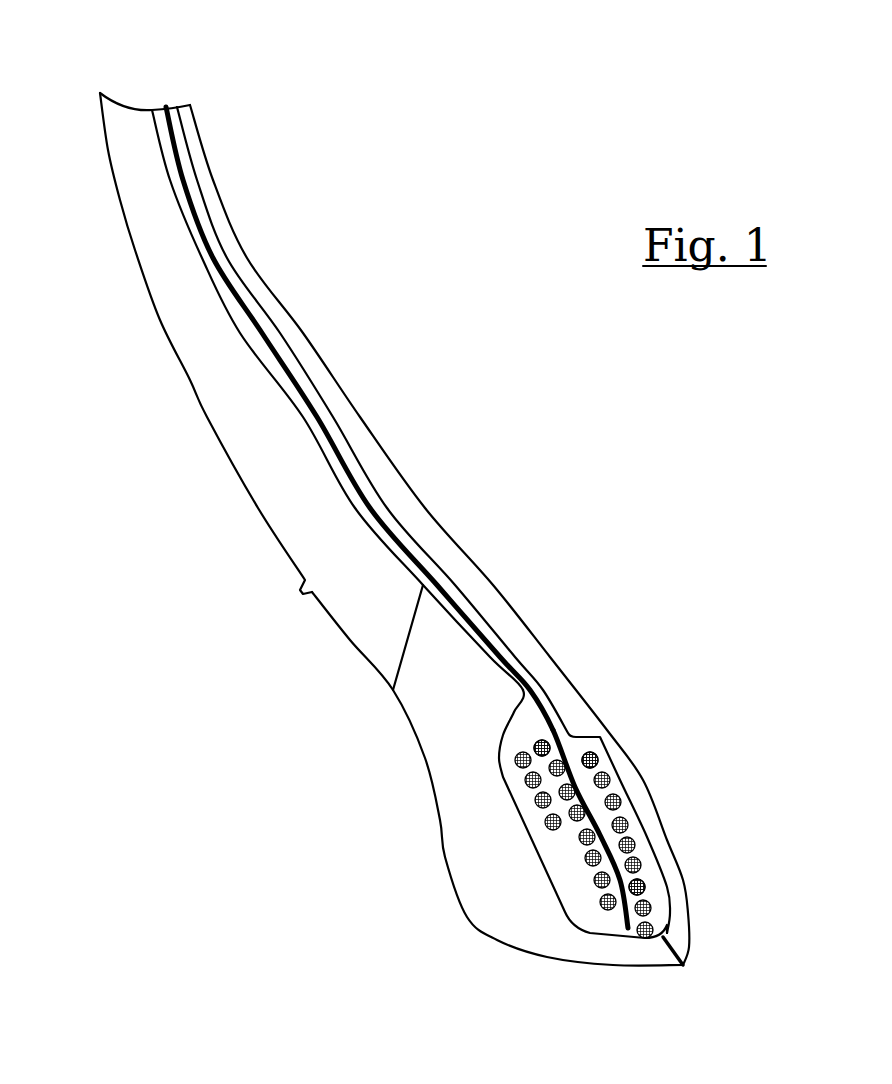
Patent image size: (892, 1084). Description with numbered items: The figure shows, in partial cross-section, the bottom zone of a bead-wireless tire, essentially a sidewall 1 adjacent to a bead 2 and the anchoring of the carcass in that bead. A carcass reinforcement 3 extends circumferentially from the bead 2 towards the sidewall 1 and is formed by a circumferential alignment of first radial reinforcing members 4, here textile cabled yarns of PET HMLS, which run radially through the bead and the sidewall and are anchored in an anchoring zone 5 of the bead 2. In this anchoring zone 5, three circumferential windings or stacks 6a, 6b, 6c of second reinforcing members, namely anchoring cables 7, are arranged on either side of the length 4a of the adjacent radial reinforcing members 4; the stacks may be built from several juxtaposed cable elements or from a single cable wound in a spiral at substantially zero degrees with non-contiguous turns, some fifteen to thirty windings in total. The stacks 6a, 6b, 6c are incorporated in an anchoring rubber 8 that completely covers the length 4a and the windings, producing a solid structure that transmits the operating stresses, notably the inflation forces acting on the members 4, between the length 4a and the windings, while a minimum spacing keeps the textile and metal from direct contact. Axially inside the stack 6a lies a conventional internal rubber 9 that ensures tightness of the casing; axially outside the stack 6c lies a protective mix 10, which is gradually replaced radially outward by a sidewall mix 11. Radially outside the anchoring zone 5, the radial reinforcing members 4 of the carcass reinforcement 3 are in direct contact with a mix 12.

The sidewall 1 is at (268, 585).
The bead 2 is at (406, 864).
The carcass reinforcement 3 is at (172, 96).
The first radial reinforcing members 4 is at (225, 267).
The length of the radial reinforcing members 4a is at (605, 823).
The anchoring zone 5 is at (629, 790).
The circumferential winding or stack 6a is at (637, 878).
The circumferential winding or stack 6b is at (605, 890).
The circumferential winding or stack 6c is at (553, 820).
The anchoring cables 7 is at (643, 930).
The anchoring rubber 8 is at (550, 783).
The internal rubber 9 is at (400, 500).
The protective mix 10 is at (470, 730).
The sidewall mix 11 is at (250, 435).
The mix 12 is at (293, 408).